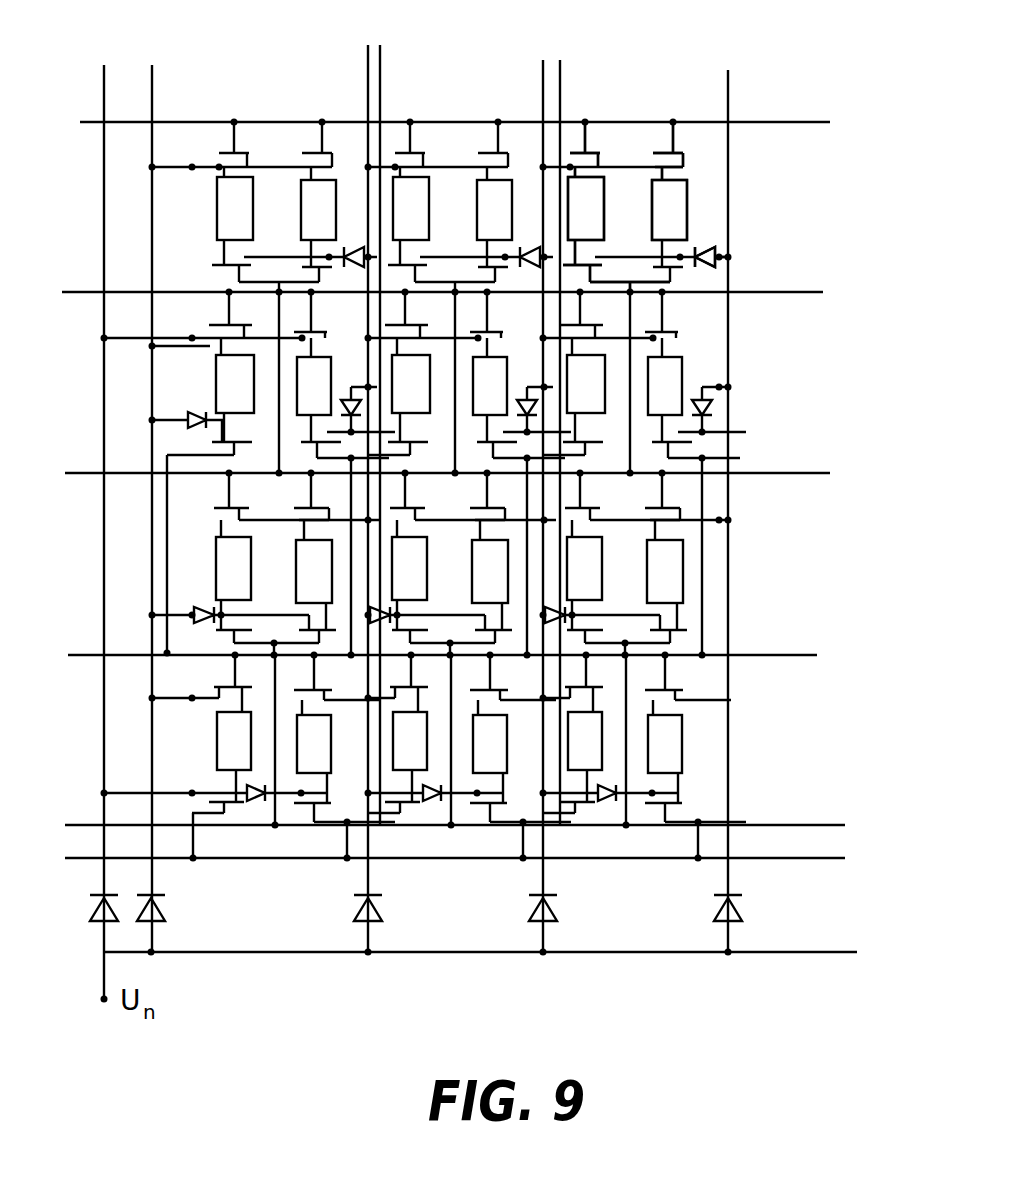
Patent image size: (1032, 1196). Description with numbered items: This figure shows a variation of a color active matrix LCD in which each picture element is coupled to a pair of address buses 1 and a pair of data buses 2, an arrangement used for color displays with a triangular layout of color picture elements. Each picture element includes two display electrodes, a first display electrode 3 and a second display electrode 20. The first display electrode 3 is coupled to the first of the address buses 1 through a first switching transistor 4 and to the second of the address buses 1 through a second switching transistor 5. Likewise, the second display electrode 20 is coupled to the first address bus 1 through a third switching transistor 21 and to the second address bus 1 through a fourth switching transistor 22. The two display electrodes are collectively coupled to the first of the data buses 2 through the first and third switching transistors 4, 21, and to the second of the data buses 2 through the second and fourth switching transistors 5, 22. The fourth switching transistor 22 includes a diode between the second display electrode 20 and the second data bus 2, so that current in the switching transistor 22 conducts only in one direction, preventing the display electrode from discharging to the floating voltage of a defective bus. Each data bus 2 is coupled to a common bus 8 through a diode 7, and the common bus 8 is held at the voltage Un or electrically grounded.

The address bus 1 is at (104, 74).
The data bus 2 is at (798, 122).
The first display electrode 3 is at (576, 190).
The first switching transistor 4 is at (580, 152).
The second switching transistor 5 is at (600, 275).
The diode 7 is at (742, 908).
The common bus 8 is at (728, 954).
The second display electrode 20 is at (688, 213).
The third switching transistor 21 is at (683, 150).
The fourth switching transistor 22 is at (682, 281).